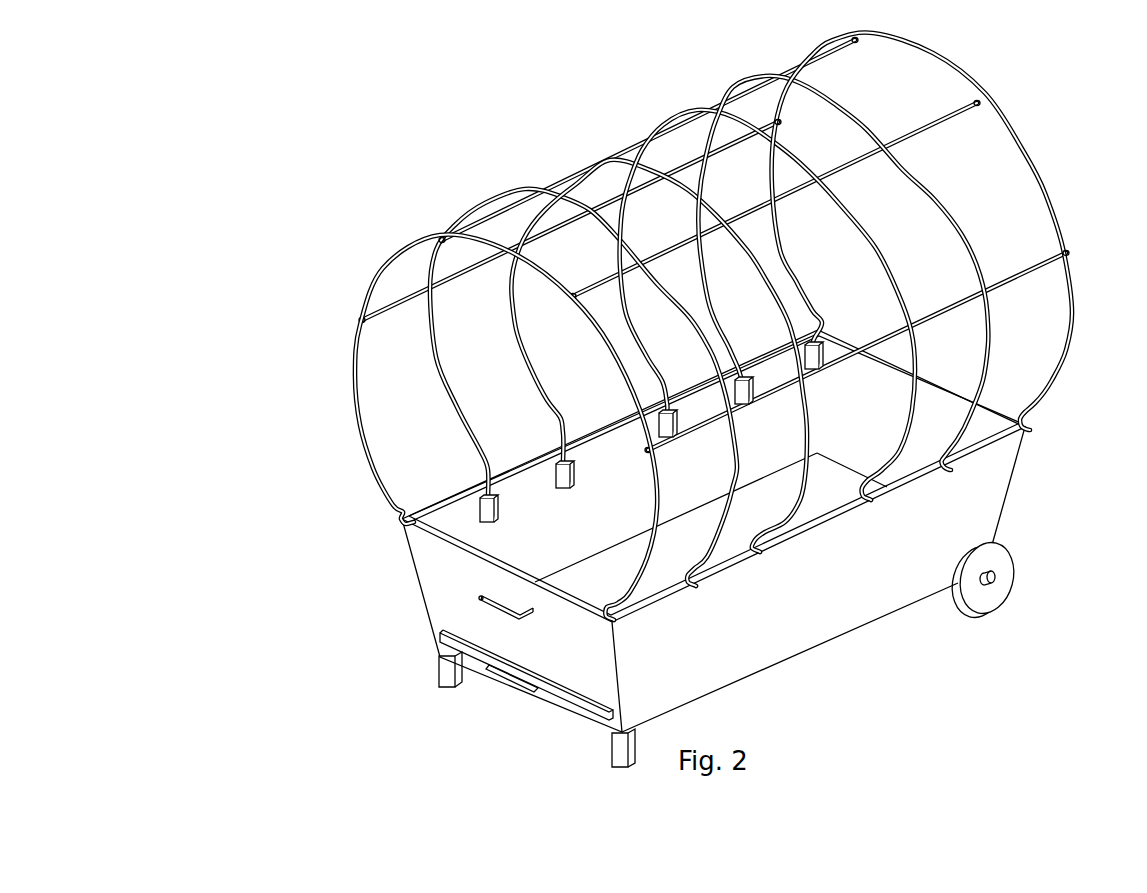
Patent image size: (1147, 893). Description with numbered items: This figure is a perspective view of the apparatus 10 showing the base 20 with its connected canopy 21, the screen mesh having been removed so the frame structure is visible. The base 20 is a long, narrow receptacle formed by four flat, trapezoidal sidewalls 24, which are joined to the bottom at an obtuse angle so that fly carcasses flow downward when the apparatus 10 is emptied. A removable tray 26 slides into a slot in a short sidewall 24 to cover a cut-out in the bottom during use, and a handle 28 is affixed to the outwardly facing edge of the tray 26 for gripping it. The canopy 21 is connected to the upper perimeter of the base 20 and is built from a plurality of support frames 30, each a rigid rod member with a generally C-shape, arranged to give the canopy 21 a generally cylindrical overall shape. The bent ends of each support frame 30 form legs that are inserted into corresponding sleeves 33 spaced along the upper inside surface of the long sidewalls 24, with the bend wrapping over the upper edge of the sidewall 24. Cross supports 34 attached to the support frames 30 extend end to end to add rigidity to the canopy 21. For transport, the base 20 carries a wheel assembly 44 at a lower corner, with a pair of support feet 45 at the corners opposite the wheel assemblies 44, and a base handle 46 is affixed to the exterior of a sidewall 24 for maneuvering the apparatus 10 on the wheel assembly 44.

The apparatus 10 is at (280, 146).
The base 20 is at (1031, 494).
The canopy 21 is at (1041, 116).
The sidewall 24 is at (426, 597).
The removable tray 26 is at (545, 698).
The handle 28 is at (493, 678).
The support frame 30 is at (380, 262).
The sleeve 33 is at (557, 488).
The cross support 34 is at (626, 142).
The wheel assembly 44 is at (1000, 576).
The support foot 45 is at (440, 674).
The base handle 46 is at (478, 603).